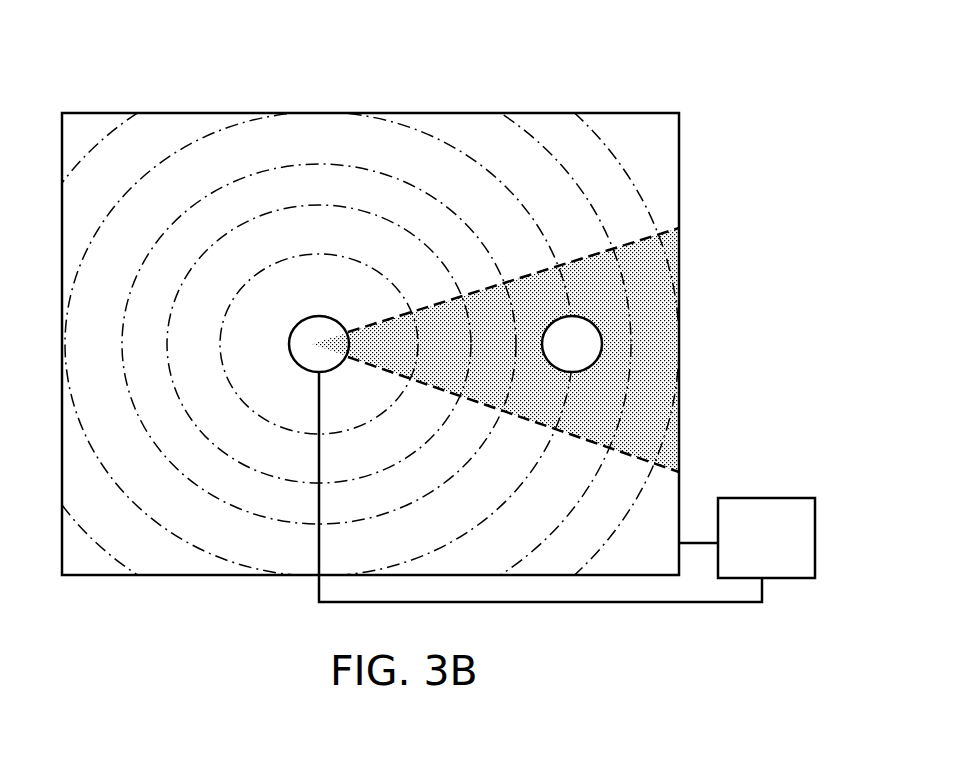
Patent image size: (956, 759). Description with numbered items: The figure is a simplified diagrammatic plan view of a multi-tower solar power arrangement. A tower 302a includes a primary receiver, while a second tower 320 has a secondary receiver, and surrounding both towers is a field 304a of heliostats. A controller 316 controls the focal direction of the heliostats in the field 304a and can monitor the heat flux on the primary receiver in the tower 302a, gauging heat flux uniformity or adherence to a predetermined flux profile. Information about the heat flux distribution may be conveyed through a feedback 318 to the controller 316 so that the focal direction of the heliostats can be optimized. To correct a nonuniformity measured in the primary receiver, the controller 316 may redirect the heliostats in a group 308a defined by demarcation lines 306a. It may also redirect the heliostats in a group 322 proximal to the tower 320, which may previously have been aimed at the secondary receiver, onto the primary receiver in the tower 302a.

The field of heliostats 304a is at (628, 112).
The tower 302a is at (292, 331).
The group of heliostats 308a is at (393, 345).
The demarcation lines 306a is at (487, 400).
The tower 320 is at (601, 337).
The group of heliostats 322 is at (585, 412).
The controller 316 is at (765, 498).
The feedback 318 is at (685, 602).